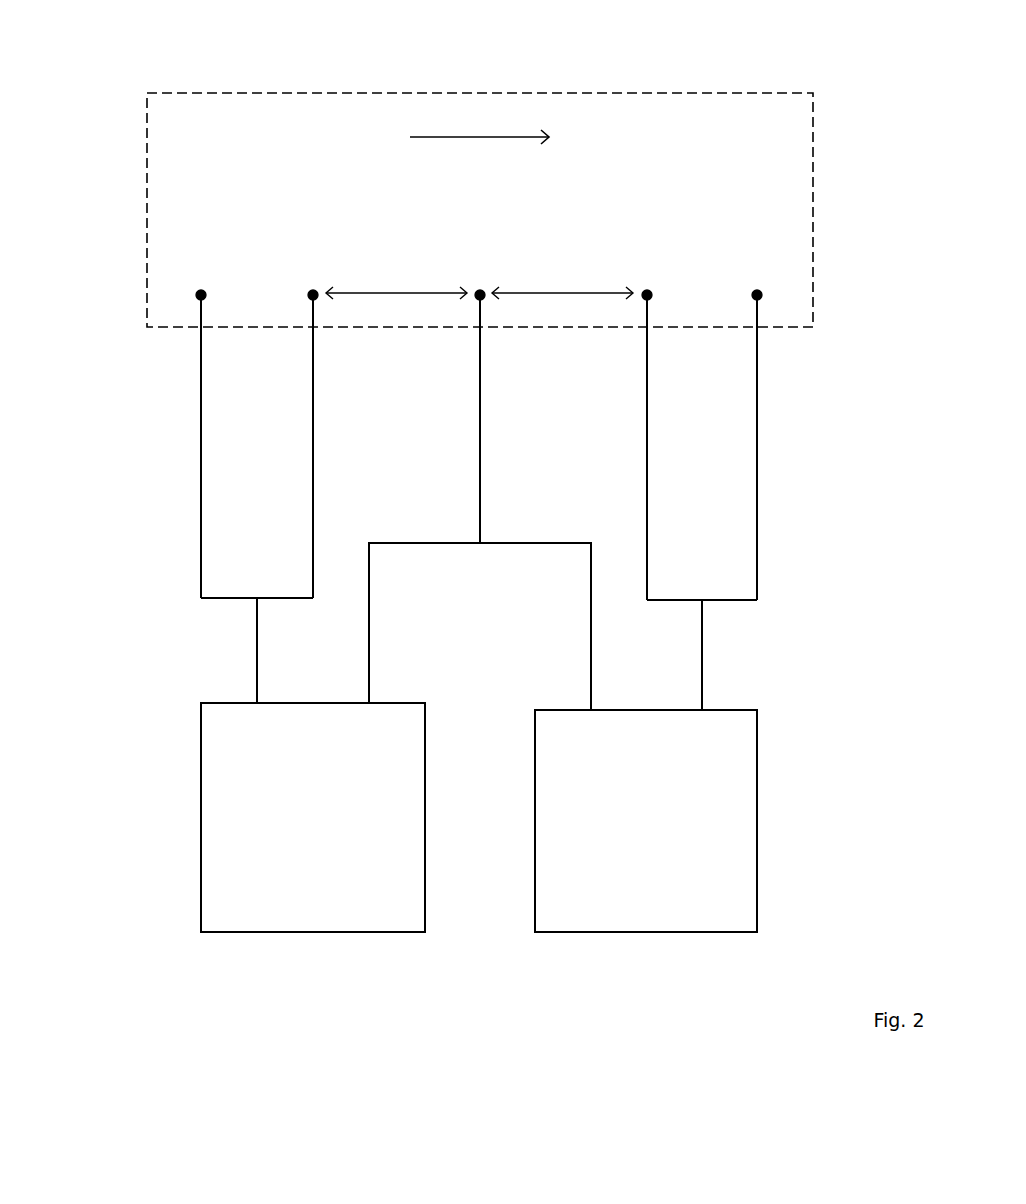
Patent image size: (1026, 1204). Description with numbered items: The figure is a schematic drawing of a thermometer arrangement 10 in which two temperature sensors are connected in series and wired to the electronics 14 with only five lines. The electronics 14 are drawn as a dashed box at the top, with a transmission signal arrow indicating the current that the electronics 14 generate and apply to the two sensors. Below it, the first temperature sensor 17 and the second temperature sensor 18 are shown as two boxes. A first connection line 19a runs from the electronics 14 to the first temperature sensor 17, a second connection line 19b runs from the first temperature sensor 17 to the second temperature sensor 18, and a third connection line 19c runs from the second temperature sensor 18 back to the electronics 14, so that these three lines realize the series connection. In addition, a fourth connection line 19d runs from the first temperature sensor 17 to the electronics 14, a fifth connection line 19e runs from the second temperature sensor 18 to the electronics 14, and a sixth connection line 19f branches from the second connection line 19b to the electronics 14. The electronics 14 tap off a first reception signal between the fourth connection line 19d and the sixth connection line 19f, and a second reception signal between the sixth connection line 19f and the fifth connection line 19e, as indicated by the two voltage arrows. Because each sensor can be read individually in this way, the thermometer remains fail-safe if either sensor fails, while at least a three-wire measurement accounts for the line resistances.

The sensor device 10 is at (13, 43).
The electronics 14 is at (142, 241).
The first temperature sensor 17 is at (313, 817).
The second temperature sensor 18 is at (646, 821).
The first connection line 19a is at (176, 446).
The second connection line 19b is at (480, 626).
The third connection line 19c is at (782, 447).
The fourth connection line 19d is at (257, 499).
The fifth connection line 19e is at (702, 502).
The sixth connection line 19f is at (505, 419).